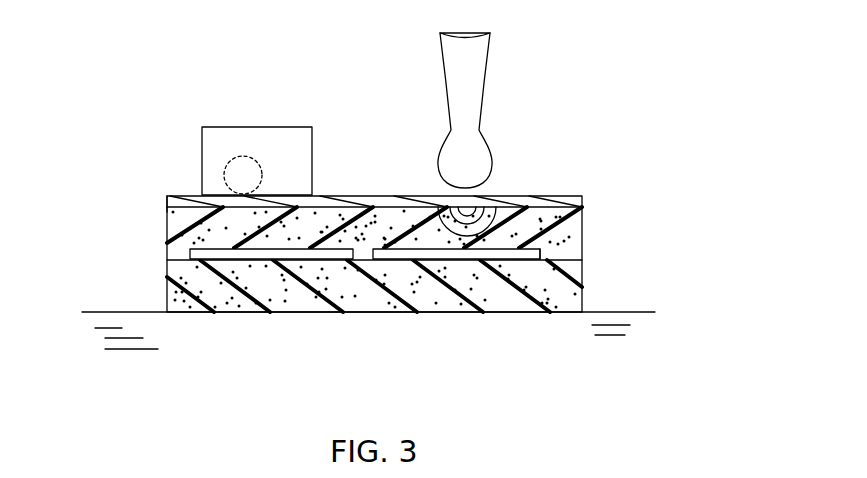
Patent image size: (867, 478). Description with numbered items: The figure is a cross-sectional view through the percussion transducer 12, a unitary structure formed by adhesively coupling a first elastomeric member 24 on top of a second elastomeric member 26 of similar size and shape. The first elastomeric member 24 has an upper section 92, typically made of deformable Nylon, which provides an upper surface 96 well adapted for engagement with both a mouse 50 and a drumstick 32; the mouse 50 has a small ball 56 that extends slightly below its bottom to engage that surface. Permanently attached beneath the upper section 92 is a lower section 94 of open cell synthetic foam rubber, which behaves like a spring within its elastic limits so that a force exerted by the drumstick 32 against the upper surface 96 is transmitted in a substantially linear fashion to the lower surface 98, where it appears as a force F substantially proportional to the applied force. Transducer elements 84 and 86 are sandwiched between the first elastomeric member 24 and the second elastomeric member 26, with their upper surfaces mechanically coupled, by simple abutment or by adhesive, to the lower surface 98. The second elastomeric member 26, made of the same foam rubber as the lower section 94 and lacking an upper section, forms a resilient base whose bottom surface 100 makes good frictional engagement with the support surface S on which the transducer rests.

The percussion transducer 12 is at (633, 140).
The first elastomeric member 24 is at (598, 217).
The second elastomeric member 26 is at (598, 268).
The drumstick 32 is at (470, 78).
The mouse 50 is at (237, 128).
The ball 56 is at (260, 157).
The transducer element 84 is at (268, 254).
The transducer element 86 is at (445, 258).
The upper section 92 is at (167, 202).
The lower section 94 is at (180, 232).
The upper surface 96 is at (338, 189).
The lower surface 98 is at (550, 266).
The bottom surface 100 is at (340, 313).
The support surface S is at (368, 340).
The force F is at (480, 230).